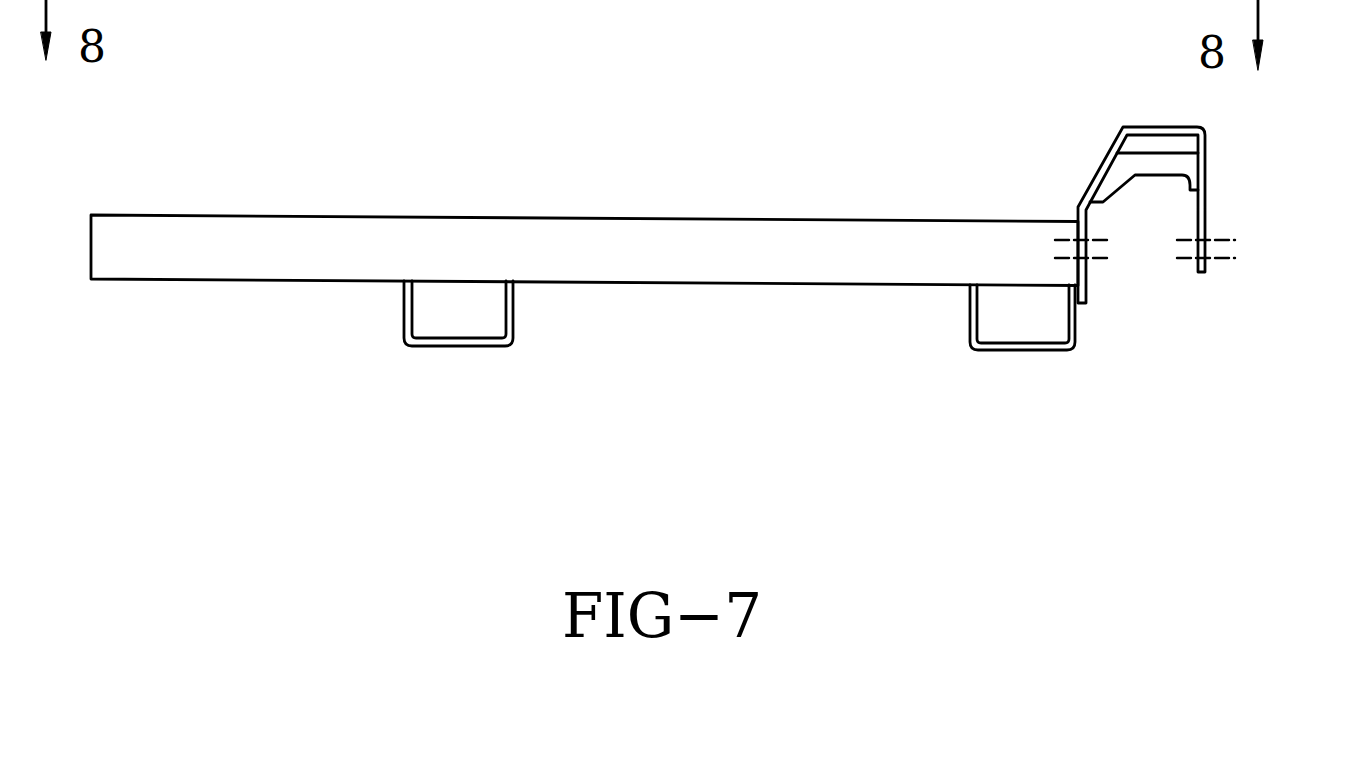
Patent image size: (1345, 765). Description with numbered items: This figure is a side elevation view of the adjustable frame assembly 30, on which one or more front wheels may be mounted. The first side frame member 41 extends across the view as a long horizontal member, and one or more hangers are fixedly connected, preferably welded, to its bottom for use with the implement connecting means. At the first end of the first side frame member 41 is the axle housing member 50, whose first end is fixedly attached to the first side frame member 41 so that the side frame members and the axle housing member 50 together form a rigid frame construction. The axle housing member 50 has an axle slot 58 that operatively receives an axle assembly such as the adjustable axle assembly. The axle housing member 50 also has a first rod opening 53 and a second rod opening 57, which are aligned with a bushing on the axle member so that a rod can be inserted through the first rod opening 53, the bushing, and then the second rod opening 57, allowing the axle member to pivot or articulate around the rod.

The adjustable frame assembly 30 is at (570, 140).
The first side frame member 41 is at (619, 222).
The axle housing member 50 is at (1120, 132).
The first rod opening 53 is at (1268, 253).
The second rod opening 57 is at (1130, 252).
The axle slot 58 is at (1142, 355).